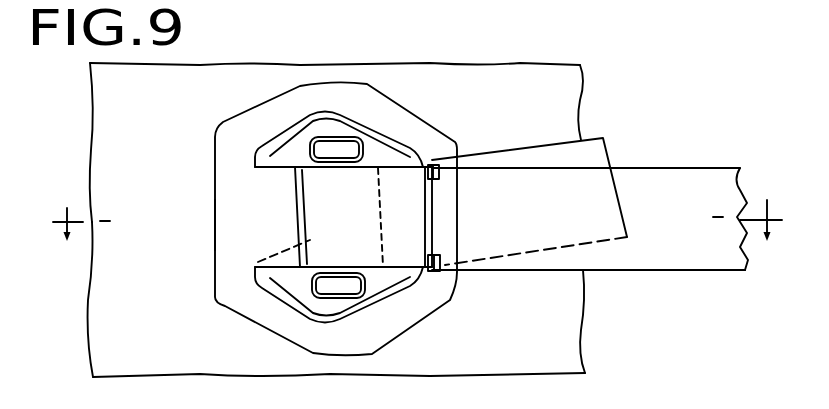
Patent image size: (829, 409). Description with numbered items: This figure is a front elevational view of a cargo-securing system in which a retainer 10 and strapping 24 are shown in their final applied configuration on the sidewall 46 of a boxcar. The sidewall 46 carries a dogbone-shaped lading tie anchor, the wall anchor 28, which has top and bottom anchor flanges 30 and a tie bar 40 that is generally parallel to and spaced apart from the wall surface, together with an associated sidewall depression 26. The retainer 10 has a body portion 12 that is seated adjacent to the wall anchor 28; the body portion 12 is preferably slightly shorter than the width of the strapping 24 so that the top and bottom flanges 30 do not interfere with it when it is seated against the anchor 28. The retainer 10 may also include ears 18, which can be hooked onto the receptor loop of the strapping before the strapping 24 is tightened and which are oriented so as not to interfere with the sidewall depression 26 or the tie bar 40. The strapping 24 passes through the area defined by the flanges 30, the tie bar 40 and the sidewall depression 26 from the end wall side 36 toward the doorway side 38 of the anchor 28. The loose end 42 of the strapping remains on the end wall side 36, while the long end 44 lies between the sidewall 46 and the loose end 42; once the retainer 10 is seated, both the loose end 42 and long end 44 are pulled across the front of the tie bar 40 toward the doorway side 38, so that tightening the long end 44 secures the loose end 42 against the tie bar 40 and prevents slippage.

The retainer 10 is at (415, 213).
The body portion 12 is at (407, 182).
The ears 18 is at (436, 157).
The strapping 24 is at (550, 280).
The sidewall depression 26 is at (228, 226).
The wall anchor 28 is at (389, 114).
The anchor flanges 30 is at (286, 153).
The end wall side 36 is at (150, 169).
The doorway side 38 is at (535, 136).
The tie bar 40 is at (255, 263).
The loose end 42 is at (605, 150).
The long end 44 is at (705, 251).
The sidewall 46 is at (155, 337).